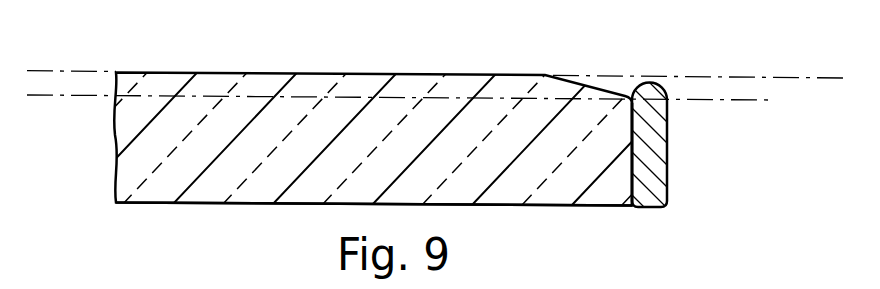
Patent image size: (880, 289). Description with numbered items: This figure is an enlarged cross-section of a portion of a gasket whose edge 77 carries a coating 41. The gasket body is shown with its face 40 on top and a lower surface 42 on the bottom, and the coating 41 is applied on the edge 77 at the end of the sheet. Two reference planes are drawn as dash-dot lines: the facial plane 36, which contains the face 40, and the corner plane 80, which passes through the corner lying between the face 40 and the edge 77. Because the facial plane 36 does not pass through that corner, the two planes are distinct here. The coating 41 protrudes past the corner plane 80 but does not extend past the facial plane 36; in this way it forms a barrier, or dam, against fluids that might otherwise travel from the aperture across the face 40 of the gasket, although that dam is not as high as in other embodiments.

The facial plane 36 is at (828, 78).
The corner plane 80 is at (762, 101).
The face 40 is at (350, 72).
The lower surface of substrate 42 is at (248, 204).
The coating 41 is at (668, 125).
The edge 77 is at (628, 167).